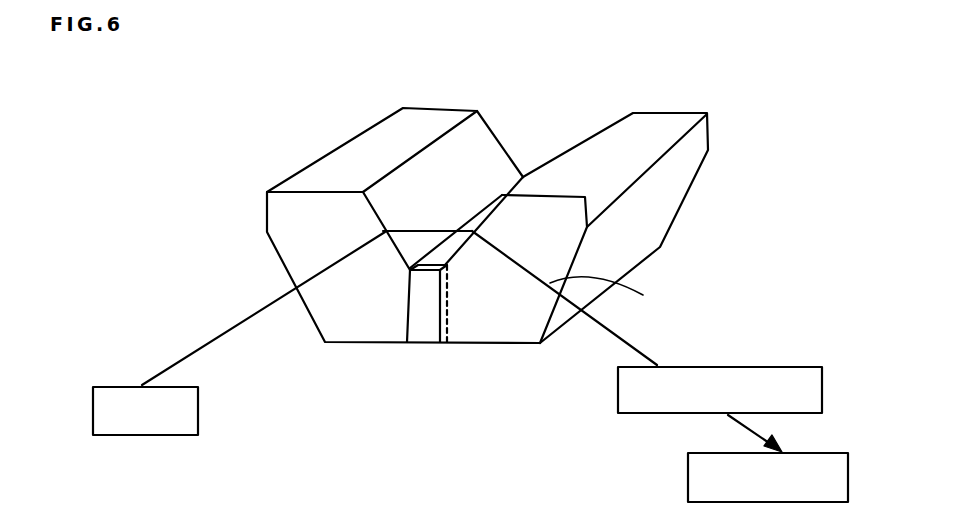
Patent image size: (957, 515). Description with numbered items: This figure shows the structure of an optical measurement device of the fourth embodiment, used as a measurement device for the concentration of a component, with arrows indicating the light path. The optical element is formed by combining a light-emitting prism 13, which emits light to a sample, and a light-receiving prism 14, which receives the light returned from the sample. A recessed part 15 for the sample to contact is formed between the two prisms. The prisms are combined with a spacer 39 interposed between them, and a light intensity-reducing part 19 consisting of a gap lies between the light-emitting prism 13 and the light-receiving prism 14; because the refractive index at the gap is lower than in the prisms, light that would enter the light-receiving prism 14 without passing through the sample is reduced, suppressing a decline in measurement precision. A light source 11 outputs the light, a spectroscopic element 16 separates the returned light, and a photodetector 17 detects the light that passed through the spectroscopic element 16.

The light source 11 is at (187, 417).
The light-emitting prism 13 is at (410, 258).
The light-receiving prism 14 is at (638, 142).
The recessed part 15 is at (427, 177).
The spectroscopic element 16 is at (753, 382).
The photodetector 17 is at (697, 478).
The light intensity-reducing part 19 is at (463, 247).
The spacer 39 is at (423, 330).